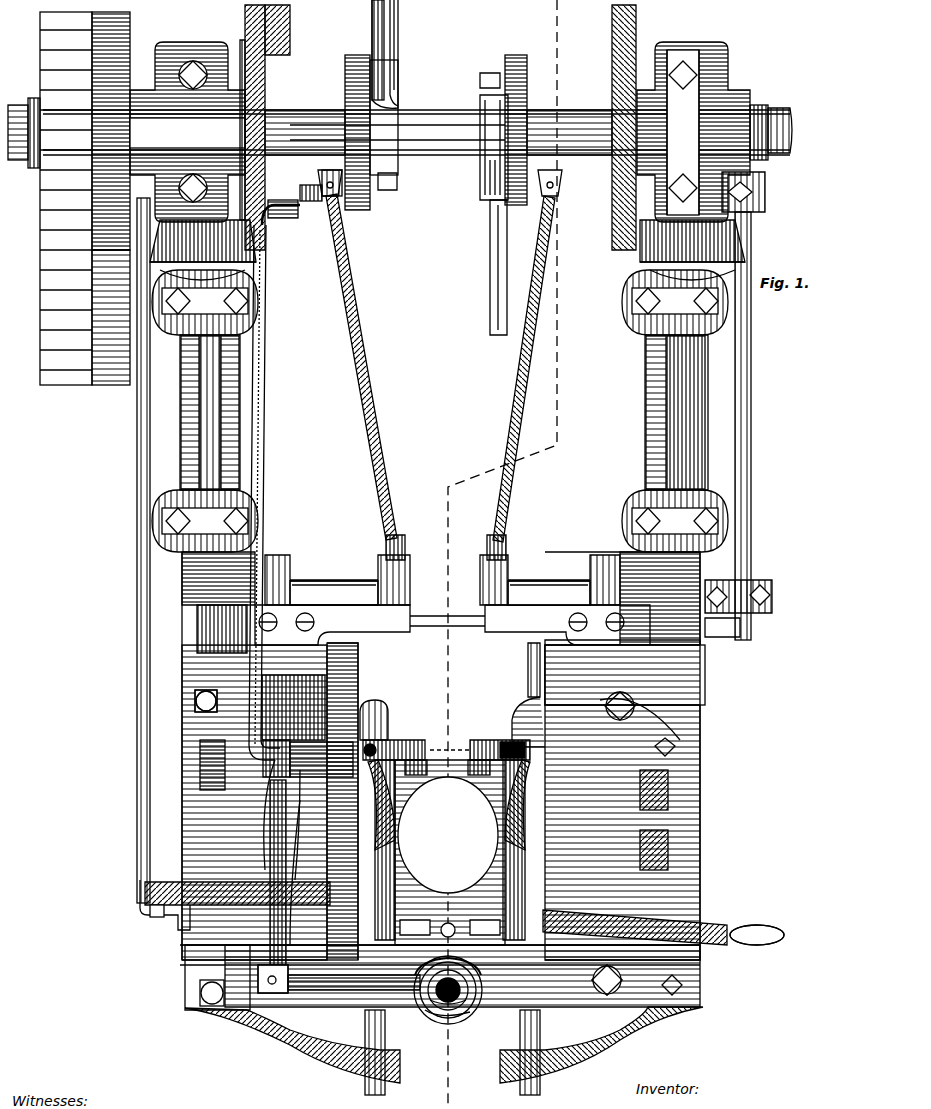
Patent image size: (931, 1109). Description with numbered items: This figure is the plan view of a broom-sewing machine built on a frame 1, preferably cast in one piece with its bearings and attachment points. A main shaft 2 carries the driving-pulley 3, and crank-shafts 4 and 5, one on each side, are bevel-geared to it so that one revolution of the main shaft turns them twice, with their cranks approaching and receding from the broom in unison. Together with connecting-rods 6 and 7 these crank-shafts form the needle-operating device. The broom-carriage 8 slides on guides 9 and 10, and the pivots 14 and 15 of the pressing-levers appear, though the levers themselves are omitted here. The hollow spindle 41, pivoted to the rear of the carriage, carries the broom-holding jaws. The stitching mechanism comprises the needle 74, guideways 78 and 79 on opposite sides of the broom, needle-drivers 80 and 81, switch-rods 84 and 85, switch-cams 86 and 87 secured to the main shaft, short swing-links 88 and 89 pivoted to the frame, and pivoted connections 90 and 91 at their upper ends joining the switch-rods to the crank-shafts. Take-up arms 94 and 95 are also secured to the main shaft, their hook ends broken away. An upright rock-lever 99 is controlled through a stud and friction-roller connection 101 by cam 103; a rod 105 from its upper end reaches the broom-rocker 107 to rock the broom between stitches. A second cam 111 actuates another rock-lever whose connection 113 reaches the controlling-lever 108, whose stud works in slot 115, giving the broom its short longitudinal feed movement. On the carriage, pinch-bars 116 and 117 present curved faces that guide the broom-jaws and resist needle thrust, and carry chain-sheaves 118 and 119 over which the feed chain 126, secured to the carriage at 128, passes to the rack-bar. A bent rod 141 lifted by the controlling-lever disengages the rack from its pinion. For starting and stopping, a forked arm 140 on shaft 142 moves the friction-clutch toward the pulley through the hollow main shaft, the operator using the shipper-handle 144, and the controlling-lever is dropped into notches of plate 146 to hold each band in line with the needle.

The frame 1 is at (230, 412).
The main shaft 2 is at (430, 112).
The driving-pulley 3 is at (97, 368).
The crank-shaft 4 is at (645, 414).
The crank-shaft 5 is at (180, 420).
The connecting-rod 6 is at (540, 580).
The connecting-rod 7 is at (330, 580).
The broom-carriage 8 is at (443, 900).
The guide 9 is at (358, 692).
The guide 10 is at (528, 676).
The pivot 14 is at (538, 1045).
The pivot 15 is at (360, 1040).
The hollow spindle 41 is at (466, 1012).
The needle 74 is at (440, 627).
The guideway 78 is at (567, 625).
The guideway 79 is at (332, 625).
The needle-driver 80 is at (506, 552).
The needle-driver 81 is at (400, 552).
The switch-rod 84 is at (514, 350).
The switch-rod 85 is at (350, 305).
The switch-cam 86 is at (527, 85).
The switch-cam 87 is at (345, 78).
The swing-link 88 is at (528, 205).
The swing-link 89 is at (340, 205).
The pivoted connection 90 is at (558, 178).
The pivoted connection 91 is at (320, 176).
The take-up arm 94 is at (490, 297).
The take-up arm 95 is at (396, 34).
The rock-lever 99 is at (270, 240).
The stud and friction-roller connection 101 is at (290, 222).
The cam 103 is at (290, 28).
The rod 105 is at (266, 425).
The broom-rocker 107 is at (262, 835).
The controlling-lever 108 is at (185, 905).
The cam 111 is at (108, 250).
The connection 113 is at (137, 600).
The slot 115 is at (150, 905).
The pinch-bar 116 is at (478, 770).
The pinch-bar 117 is at (412, 770).
The chain-sheave 118 is at (478, 738).
The chain-sheave 119 is at (405, 738).
The chain 126 is at (447, 765).
The attachment point 128 is at (505, 738).
The forked arm 140 is at (772, 108).
The bent rod 141 is at (310, 920).
The shaft 142 is at (752, 430).
The shipper-handle 144 is at (712, 637).
The plate 146 is at (700, 828).